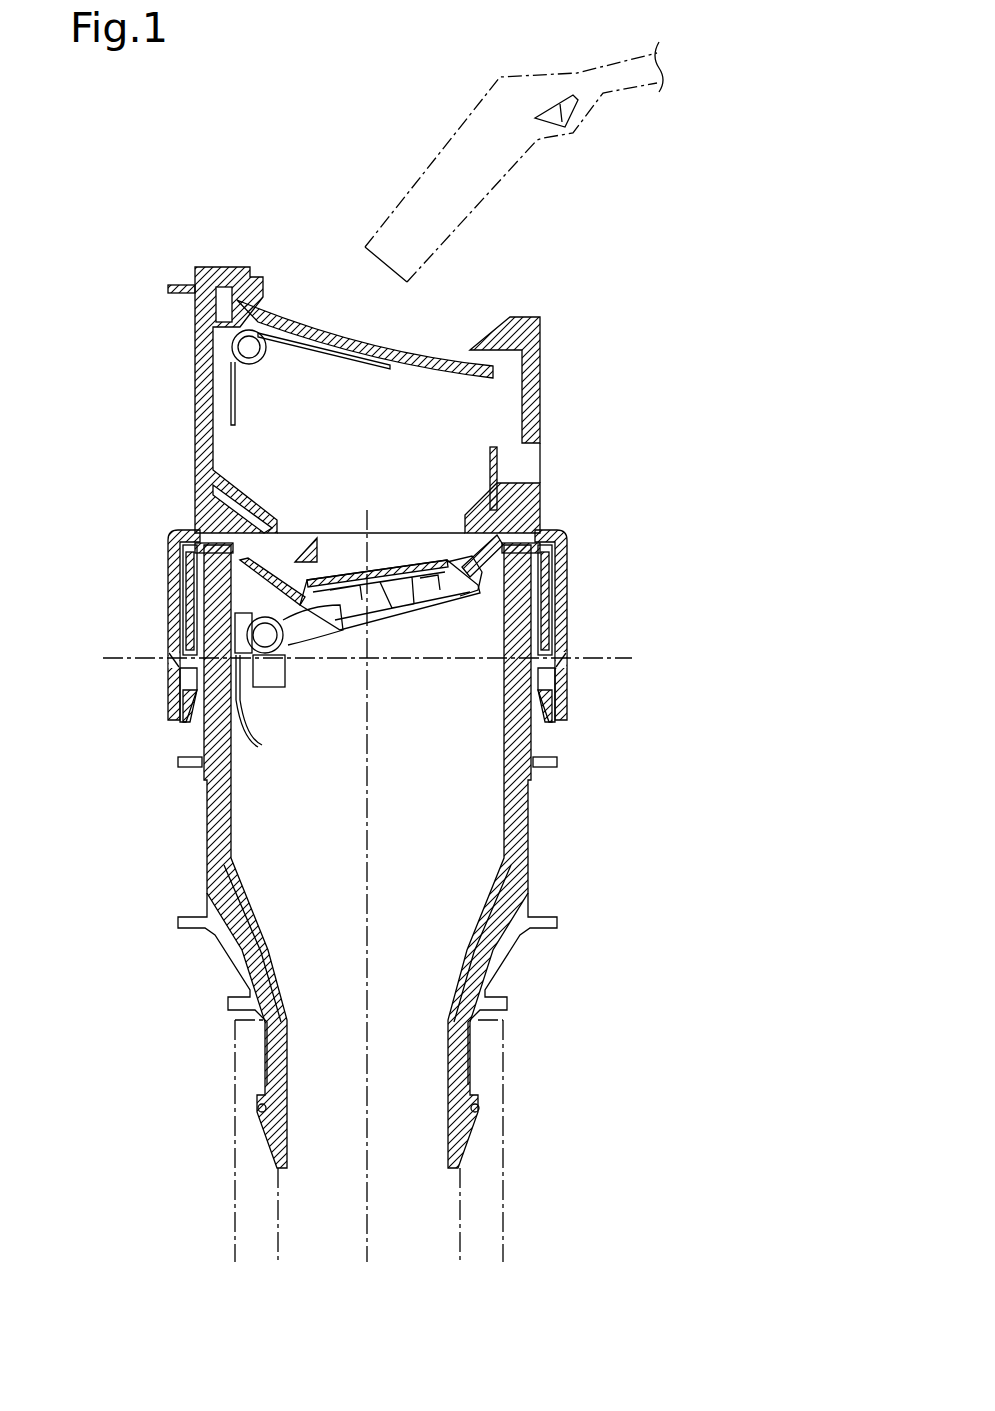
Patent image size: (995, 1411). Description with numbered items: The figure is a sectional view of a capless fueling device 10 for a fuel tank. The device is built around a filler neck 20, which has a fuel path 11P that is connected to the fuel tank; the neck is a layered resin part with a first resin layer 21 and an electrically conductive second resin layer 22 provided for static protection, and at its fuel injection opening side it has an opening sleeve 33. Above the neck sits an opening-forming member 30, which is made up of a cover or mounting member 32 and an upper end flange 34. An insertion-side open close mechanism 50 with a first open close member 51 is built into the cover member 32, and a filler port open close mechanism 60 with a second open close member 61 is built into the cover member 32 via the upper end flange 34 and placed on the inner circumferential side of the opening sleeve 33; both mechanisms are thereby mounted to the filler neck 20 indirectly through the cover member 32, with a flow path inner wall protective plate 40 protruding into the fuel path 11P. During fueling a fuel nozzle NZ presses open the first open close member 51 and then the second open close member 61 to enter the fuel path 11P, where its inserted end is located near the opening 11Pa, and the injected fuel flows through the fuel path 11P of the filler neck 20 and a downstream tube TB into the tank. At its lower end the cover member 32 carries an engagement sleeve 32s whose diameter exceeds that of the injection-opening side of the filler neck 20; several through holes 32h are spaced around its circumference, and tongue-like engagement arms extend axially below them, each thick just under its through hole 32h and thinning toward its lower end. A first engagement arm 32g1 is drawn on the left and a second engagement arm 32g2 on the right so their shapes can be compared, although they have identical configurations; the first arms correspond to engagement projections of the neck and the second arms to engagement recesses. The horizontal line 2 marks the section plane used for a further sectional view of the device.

The fueling device 10 is at (578, 235).
The fuel nozzle NZ is at (473, 212).
The downstream tube TB is at (503, 1143).
The fuel path 11P is at (425, 799).
The insertion opening of fuel passage 11Pa is at (428, 477).
The filler neck 20 is at (439, 856).
The first resin layer 21 is at (523, 900).
The second resin layer 22 is at (527, 867).
The opening-forming member 30 is at (470, 436).
The cover member 32 is at (540, 414).
The engagement sleeve 32s is at (167, 603).
The through holes 32h is at (175, 657).
The first engagement arm 32g1 is at (183, 722).
The second engagement arm 32g2 is at (567, 702).
The opening sleeve 33 is at (478, 610).
The upper end flange 34 is at (540, 504).
The flow path inner wall protective plate 40 is at (497, 600).
The insertion-side open close mechanism 50 is at (362, 324).
The first open close member 51 is at (298, 318).
The filler port open close mechanism 60 is at (369, 616).
The second open close member 61 is at (393, 568).
The line 2- 2 is at (111, 646).